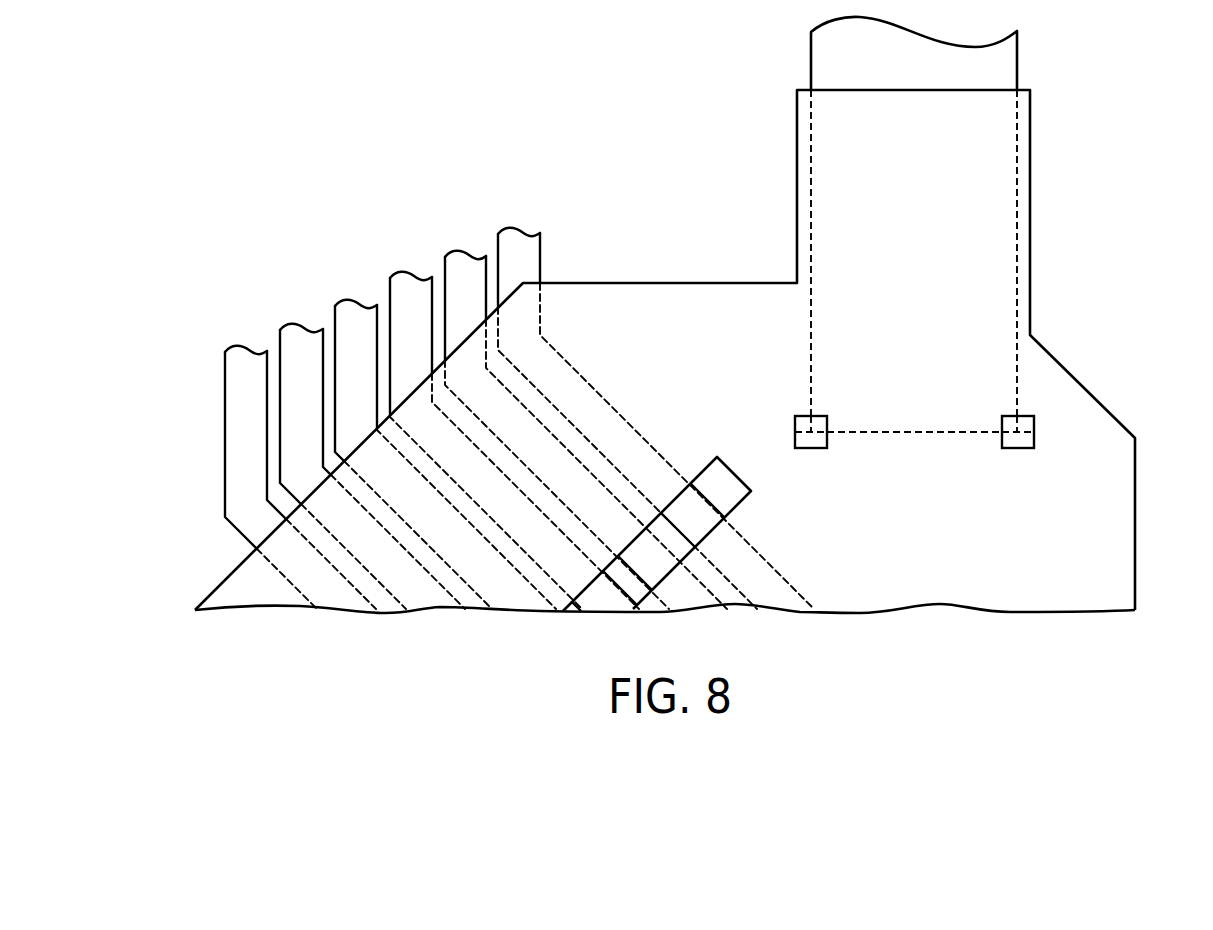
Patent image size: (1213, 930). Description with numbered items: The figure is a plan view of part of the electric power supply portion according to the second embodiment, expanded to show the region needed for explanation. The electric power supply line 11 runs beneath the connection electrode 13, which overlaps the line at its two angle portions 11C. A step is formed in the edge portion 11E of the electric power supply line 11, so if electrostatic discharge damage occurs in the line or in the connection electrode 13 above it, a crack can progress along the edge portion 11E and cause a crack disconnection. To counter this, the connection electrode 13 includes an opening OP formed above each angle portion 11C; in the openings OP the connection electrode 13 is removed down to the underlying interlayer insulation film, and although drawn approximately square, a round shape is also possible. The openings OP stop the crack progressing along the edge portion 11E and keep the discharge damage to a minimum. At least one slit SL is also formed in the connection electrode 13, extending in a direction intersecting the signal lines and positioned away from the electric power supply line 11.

The electric power supply line 11 is at (1017, 57).
The edge portion 11E is at (811, 355).
The angle portion 11C is at (797, 432).
The opening OP is at (813, 449).
The slit SL is at (717, 457).
The connection electrode 13 is at (1135, 510).